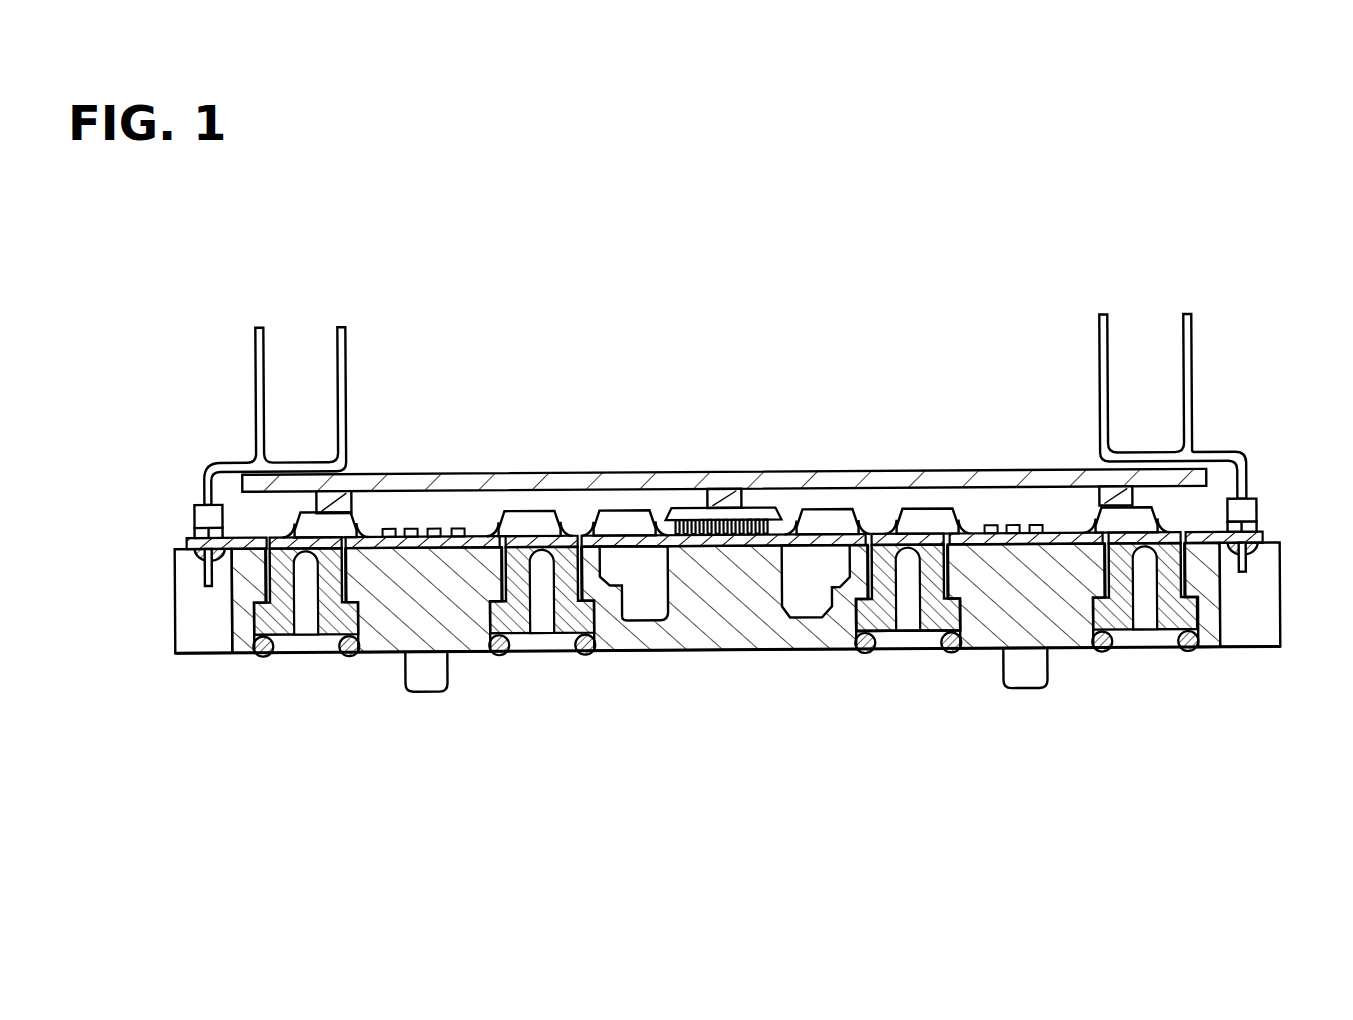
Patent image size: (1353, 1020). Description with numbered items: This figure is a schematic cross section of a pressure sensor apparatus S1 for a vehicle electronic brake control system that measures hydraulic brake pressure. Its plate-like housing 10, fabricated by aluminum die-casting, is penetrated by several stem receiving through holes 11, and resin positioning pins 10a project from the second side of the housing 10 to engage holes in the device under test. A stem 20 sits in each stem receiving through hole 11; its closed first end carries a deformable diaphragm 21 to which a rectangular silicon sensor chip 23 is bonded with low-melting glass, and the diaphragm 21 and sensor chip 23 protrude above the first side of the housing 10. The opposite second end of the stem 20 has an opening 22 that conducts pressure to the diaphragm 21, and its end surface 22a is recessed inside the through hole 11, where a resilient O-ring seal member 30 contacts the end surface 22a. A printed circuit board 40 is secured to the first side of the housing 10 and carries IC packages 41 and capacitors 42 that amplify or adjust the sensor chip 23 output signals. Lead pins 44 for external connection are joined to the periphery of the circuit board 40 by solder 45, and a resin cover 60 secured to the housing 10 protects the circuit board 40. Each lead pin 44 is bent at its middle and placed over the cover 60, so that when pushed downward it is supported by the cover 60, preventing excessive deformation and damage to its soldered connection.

The pressure sensor apparatus S1 is at (1046, 322).
The housing 10 is at (1262, 653).
The positioning pins 10a is at (428, 690).
The stem receiving through holes 11 is at (258, 637).
The stem 20 is at (279, 627).
The diaphragm 21 is at (905, 527).
The opening 22 is at (897, 634).
The end surface 22a is at (928, 636).
The sensor chip 23 is at (937, 533).
The seal member 30 is at (349, 657).
The circuit board 40 is at (1266, 542).
The IC packages 41 is at (348, 520).
The capacitors 42 is at (437, 527).
The lead pins 44 is at (258, 357).
The solder 45 is at (204, 552).
The cover 60 is at (1052, 474).